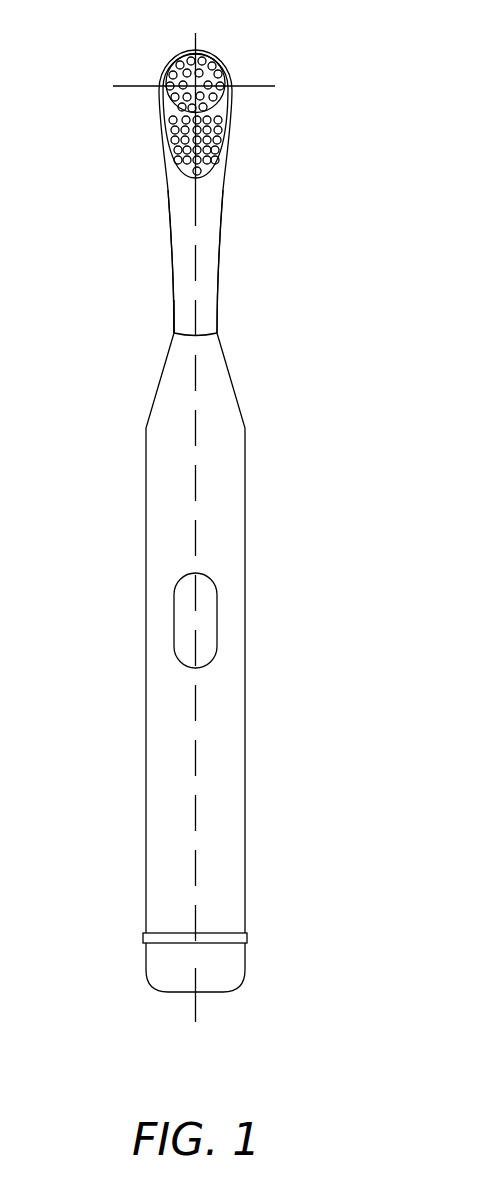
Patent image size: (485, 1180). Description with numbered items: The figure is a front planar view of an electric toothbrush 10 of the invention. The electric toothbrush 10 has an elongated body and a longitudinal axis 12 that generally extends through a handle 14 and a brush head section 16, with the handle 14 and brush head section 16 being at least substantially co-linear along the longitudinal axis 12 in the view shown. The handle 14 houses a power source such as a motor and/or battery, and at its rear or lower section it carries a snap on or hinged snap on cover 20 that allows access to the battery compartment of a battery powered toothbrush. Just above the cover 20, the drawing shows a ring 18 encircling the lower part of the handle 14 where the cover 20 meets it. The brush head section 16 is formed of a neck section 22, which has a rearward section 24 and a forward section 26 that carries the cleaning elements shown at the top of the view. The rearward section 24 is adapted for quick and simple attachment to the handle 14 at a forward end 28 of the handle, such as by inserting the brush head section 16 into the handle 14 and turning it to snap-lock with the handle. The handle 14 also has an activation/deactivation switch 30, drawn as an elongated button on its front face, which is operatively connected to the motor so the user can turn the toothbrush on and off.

The electric toothbrush 10 is at (247, 532).
The longitudinal axis 12 is at (193, 40).
The handle 14 is at (246, 762).
The brush head section 16 is at (222, 192).
The ring 18 is at (246, 918).
The snap on cover 20 is at (246, 965).
The neck section 22 is at (216, 259).
The rearward section 24 is at (172, 324).
The forward section 26 is at (228, 173).
The forward end 28 is at (218, 338).
The activation/deactivation switch 30 is at (218, 620).